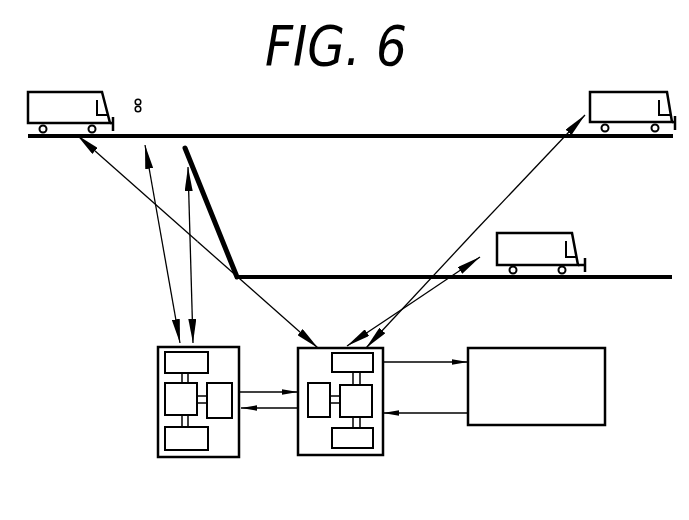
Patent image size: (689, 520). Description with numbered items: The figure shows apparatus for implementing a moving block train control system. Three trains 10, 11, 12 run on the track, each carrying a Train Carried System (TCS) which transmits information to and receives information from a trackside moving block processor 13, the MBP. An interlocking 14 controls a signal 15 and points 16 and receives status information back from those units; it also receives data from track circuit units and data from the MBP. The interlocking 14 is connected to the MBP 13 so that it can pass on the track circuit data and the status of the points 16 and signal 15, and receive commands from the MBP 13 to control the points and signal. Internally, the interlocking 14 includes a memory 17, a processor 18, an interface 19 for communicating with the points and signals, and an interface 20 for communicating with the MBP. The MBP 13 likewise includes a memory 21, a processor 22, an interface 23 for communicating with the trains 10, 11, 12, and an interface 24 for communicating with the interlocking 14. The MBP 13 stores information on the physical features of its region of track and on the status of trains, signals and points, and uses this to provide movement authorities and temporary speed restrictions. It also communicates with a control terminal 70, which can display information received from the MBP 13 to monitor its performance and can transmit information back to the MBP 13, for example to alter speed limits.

The train 10 is at (82, 92).
The train 11 is at (588, 103).
The train 12 is at (578, 243).
The moving block processor 13 is at (371, 407).
The interlocking 14 is at (161, 423).
The signal 15 is at (137, 134).
The points 16 is at (198, 134).
The memory 17 is at (182, 440).
The processor 18 is at (177, 400).
The interface 19 is at (177, 363).
The interface 20 is at (224, 412).
The memory 21 is at (365, 442).
The processor 22 is at (360, 407).
The interface 23 is at (362, 360).
The interface 24 is at (318, 407).
The control terminal 70 is at (578, 425).